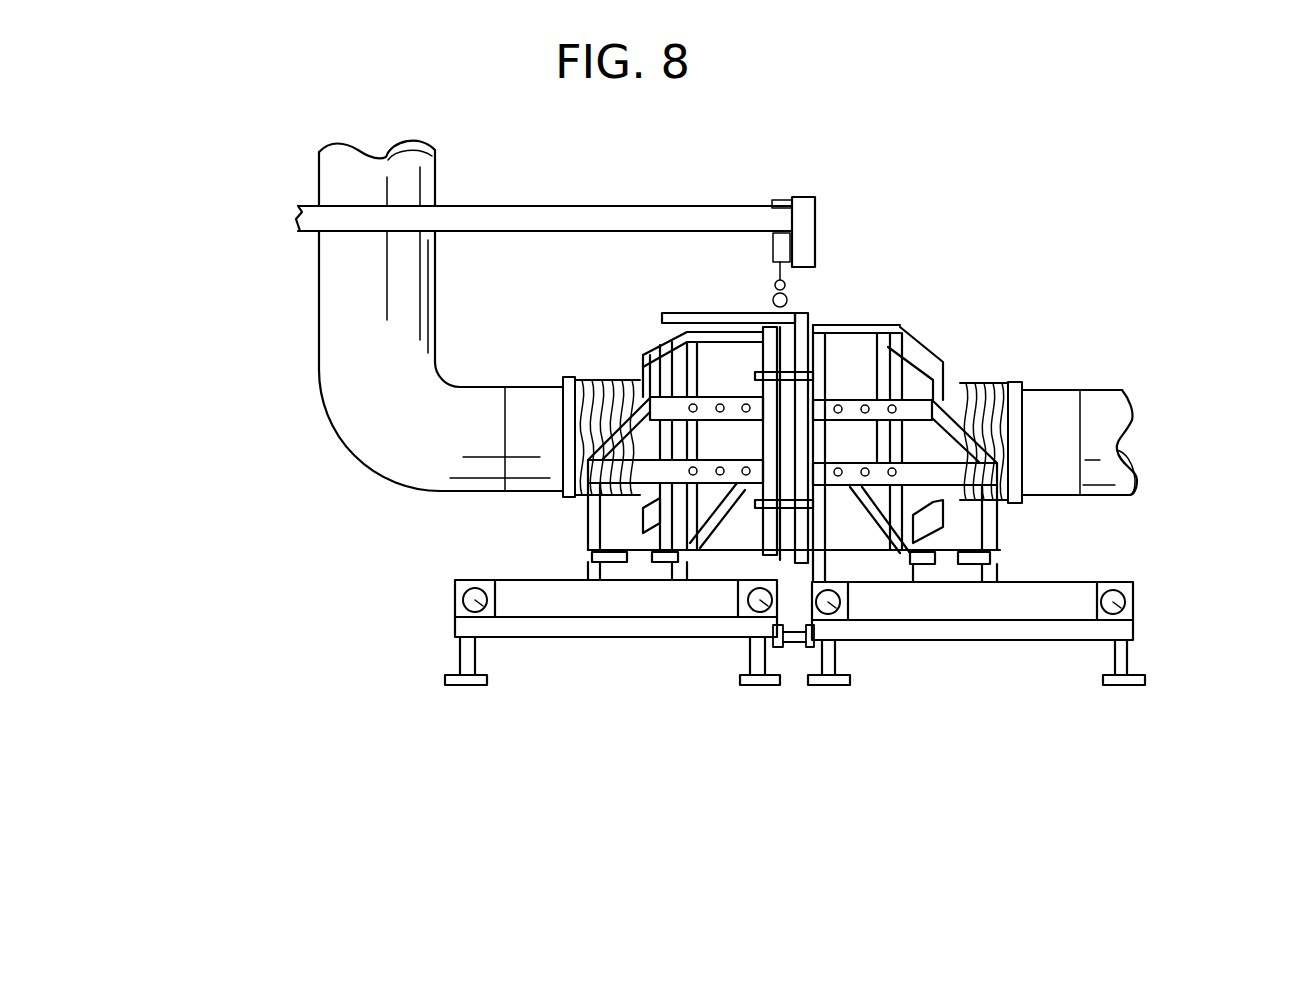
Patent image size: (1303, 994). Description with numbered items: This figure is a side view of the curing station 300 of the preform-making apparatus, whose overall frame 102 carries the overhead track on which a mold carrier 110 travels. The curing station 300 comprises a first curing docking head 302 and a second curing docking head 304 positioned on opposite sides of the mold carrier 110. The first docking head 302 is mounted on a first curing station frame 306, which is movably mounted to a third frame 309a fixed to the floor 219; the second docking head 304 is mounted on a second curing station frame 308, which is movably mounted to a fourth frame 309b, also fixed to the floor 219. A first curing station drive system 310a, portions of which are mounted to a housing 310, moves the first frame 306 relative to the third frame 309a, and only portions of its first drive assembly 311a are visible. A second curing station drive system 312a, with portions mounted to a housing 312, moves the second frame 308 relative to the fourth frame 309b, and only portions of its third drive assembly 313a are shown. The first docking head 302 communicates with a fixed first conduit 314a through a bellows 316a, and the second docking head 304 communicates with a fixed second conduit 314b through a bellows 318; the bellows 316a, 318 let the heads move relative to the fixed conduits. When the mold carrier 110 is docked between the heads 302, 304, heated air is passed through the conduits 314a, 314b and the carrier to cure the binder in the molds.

The frame 102 is at (743, 213).
The mold carrier 110 is at (815, 318).
The curing station 300 is at (1066, 206).
The first curing docking head 302 is at (727, 527).
The second curing docking head 304 is at (857, 523).
The first curing station frame 306 is at (590, 488).
The second curing station frame 308 is at (972, 470).
The third frame 309a is at (463, 655).
The fourth frame 309b is at (1133, 660).
The housing 310 is at (517, 600).
The first curing station drive system 310a is at (458, 600).
The first drive assembly 311a is at (475, 588).
The housing 312 is at (1052, 605).
The second curing station drive system 312a is at (1135, 605).
The third drive assembly 313a is at (1113, 595).
The first conduit 314a is at (335, 295).
The second conduit 314b is at (1108, 408).
The bellows 316a is at (603, 385).
The bellows 318 is at (998, 384).
The floor 219 is at (617, 785).